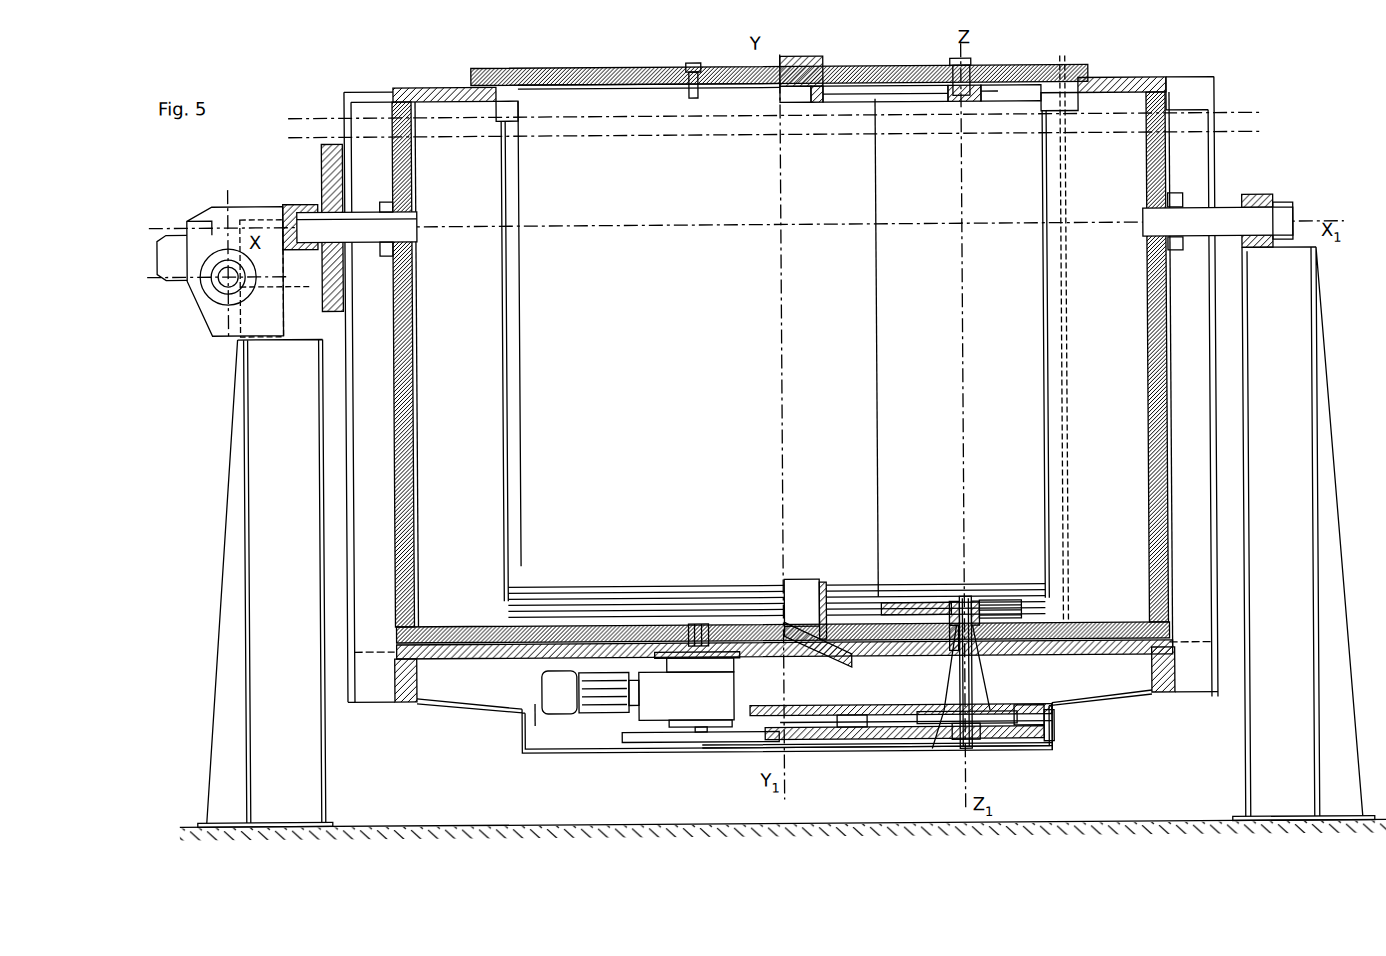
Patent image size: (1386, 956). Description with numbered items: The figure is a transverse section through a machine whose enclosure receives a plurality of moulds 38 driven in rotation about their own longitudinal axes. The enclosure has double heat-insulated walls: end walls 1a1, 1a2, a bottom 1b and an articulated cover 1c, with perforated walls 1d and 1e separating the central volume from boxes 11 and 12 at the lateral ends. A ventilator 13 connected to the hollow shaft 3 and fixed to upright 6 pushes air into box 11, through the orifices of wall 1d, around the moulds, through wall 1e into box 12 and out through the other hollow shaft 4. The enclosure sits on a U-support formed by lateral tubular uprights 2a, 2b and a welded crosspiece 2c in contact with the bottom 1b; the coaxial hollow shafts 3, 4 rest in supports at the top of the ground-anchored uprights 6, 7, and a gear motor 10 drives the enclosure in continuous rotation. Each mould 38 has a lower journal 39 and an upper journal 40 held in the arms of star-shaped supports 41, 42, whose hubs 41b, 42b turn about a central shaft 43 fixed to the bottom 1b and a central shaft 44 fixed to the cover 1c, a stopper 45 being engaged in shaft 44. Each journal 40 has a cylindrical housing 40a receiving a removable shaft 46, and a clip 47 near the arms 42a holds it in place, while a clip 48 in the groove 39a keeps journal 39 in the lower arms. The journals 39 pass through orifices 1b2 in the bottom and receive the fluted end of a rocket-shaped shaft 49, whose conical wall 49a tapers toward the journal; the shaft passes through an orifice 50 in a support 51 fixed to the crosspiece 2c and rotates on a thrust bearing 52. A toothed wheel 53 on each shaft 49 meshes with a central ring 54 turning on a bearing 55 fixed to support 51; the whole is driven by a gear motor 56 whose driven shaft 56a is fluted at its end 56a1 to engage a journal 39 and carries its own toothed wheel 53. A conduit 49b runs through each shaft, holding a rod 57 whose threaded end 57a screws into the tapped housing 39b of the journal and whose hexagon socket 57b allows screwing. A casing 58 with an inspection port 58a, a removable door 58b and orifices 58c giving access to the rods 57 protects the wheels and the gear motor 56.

The end wall 1a1 is at (415, 362).
The end wall 1a2 is at (1148, 470).
The bottom 1b is at (1106, 622).
The orifices 1b2 is at (975, 645).
The cover 1c is at (1082, 95).
The wall 1d is at (503, 470).
The wall 1e is at (1048, 398).
The lateral tubular upright 2a is at (380, 472).
The lateral tubular upright 2b is at (1195, 387).
The crosspiece 2c is at (1110, 682).
The hollow shaft 3 is at (362, 212).
The hollow shaft 4 is at (1222, 211).
The upright 6 is at (258, 515).
The upright 7 is at (1282, 464).
The gear motor 10 is at (229, 259).
The box 11 is at (465, 292).
The box 12 is at (1112, 340).
The ventilator 13 is at (222, 295).
The mould 38 is at (877, 388).
The journal 39 is at (978, 605).
The peripheral groove 39a is at (948, 645).
The tapped housing 39b is at (975, 603).
The journal 40 is at (983, 103).
The cylindrical housing 40a is at (955, 103).
The star-shaped support 41 is at (795, 580).
The central hub 41b is at (821, 583).
The star-shaped support 42 is at (828, 105).
The arms 42a is at (858, 103).
The central hub 42b is at (820, 105).
The central shaft 43 is at (805, 650).
The central shaft 44 is at (826, 66).
The stopper 45 is at (782, 90).
The removable shaft 46 is at (975, 66).
The clip 47 is at (1001, 92).
The clip 48 is at (980, 613).
The shaft 49 is at (942, 685).
The conical sleeve wall 49a is at (977, 650).
The conduit 49b is at (930, 750).
The orifice 50 is at (938, 713).
The support 51 is at (1030, 707).
The thrust bearing 52 is at (1048, 722).
The toothed wheel 53 is at (665, 742).
The central ring 54 is at (873, 718).
The bearing 55 is at (842, 730).
The gear motor 56 is at (593, 712).
The driven shaft 56a is at (700, 722).
The fluted end 56a1 is at (688, 622).
The rod 57 is at (968, 747).
The threaded end 57a is at (952, 603).
The hexagon socket 57b is at (957, 741).
The casing 58 is at (1038, 748).
The inspection port 58a is at (885, 742).
The removable door 58b is at (805, 752).
The orifices 58c is at (735, 748).